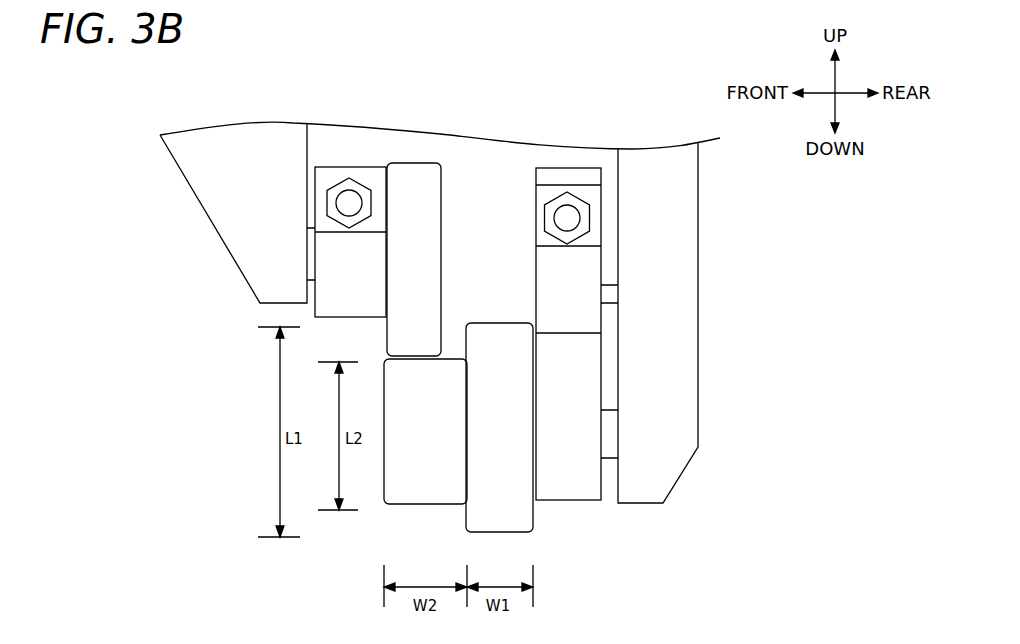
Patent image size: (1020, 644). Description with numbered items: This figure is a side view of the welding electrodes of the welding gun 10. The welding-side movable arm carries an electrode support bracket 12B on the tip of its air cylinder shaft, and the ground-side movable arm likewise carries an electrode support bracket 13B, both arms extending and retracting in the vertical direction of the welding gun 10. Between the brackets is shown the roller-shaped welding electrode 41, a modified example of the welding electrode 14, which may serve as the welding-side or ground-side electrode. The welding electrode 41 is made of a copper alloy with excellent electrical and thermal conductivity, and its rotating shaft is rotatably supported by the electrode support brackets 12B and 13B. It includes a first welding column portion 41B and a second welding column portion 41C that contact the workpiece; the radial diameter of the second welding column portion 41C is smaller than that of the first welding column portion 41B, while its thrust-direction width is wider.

The welding gun 10 is at (447, 88).
The electrode support bracket 12B is at (228, 212).
The electrode support bracket 13B is at (673, 215).
The welding electrode 14 is at (425, 188).
The welding electrode 41 is at (458, 379).
The first welding column portion 41B is at (503, 357).
The second welding column portion 41C is at (451, 383).